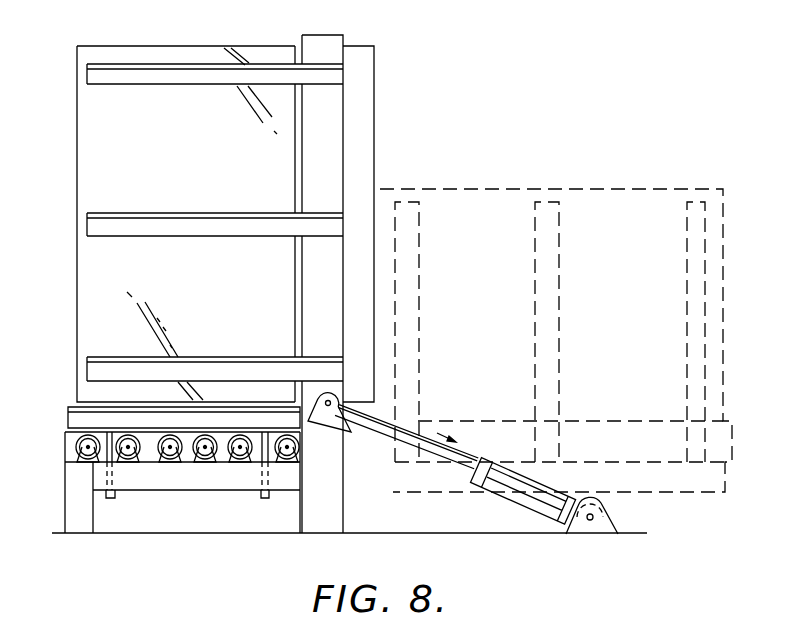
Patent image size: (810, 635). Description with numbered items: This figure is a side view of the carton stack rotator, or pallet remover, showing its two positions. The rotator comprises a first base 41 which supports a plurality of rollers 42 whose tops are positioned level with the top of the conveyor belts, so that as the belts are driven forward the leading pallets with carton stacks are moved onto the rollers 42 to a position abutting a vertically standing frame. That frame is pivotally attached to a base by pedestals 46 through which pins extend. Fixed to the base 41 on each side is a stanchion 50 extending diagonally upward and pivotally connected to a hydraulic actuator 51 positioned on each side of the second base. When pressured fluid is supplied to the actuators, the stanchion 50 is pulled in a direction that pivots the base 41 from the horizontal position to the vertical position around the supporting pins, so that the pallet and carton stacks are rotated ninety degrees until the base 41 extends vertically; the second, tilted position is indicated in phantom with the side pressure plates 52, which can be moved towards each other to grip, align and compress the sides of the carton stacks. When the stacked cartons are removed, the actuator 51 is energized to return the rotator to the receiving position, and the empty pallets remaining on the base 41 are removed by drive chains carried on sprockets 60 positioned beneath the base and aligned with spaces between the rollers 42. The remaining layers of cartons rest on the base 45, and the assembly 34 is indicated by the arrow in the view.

The rack frame 34 is at (460, 131).
The first base 41 is at (207, 481).
The rollers 42 is at (73, 434).
The base 45 is at (700, 495).
The pedestals 46 is at (333, 466).
The stanchion 50 is at (346, 433).
The hydraulic actuator 51 is at (510, 482).
The side pressure plates 52 is at (717, 257).
The sprockets 60 is at (267, 450).